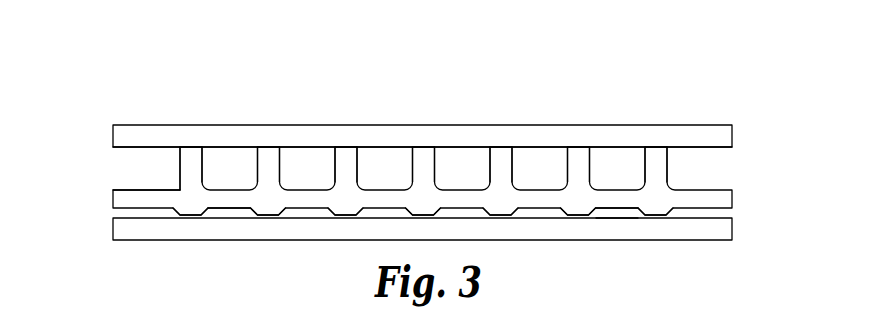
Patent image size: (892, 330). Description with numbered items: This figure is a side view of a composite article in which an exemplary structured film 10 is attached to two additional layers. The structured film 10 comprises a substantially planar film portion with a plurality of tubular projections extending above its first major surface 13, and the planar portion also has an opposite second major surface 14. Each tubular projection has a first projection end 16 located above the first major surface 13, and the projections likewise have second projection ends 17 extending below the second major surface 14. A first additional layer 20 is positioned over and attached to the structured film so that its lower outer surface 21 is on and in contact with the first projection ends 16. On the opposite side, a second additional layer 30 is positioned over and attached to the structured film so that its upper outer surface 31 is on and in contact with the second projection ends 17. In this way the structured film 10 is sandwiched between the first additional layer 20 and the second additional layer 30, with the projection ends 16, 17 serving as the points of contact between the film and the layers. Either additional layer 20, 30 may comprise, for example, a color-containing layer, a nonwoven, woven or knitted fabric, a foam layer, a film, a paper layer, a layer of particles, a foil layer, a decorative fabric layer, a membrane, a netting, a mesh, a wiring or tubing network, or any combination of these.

The structured film 10 is at (723, 202).
The first major surface 13 is at (134, 190).
The second major surface 14 is at (230, 210).
The first projection ends 16 is at (348, 148).
The second projection ends 17 is at (342, 213).
The first additional layer 20 is at (723, 138).
The lower outer surface 21 is at (708, 149).
The second additional layer 30 is at (723, 233).
The upper outer surface 31 is at (613, 210).